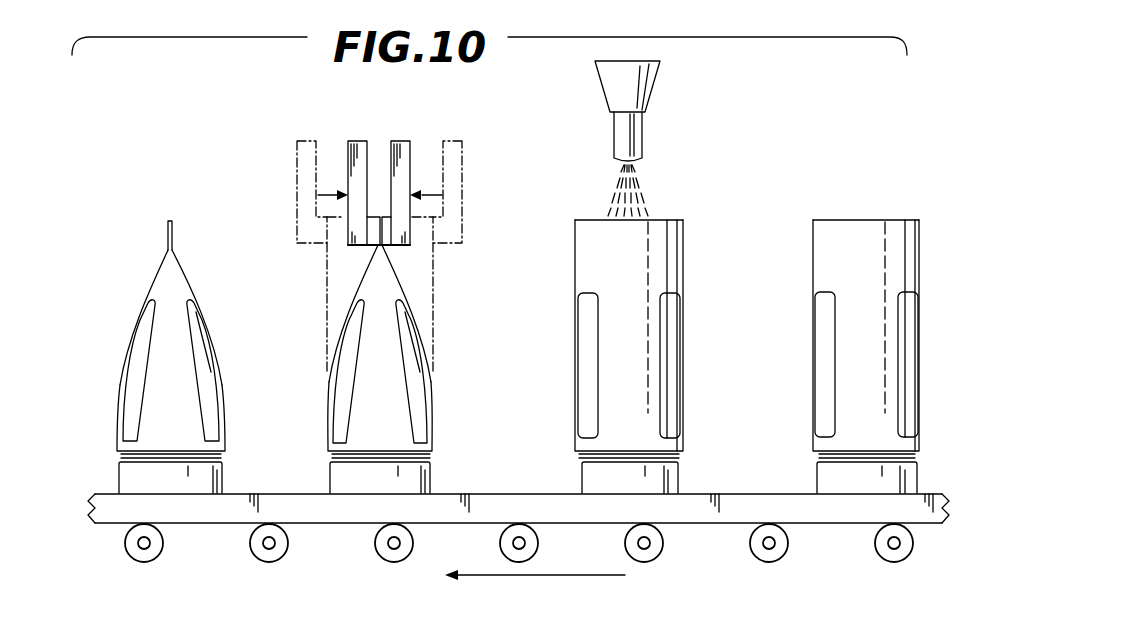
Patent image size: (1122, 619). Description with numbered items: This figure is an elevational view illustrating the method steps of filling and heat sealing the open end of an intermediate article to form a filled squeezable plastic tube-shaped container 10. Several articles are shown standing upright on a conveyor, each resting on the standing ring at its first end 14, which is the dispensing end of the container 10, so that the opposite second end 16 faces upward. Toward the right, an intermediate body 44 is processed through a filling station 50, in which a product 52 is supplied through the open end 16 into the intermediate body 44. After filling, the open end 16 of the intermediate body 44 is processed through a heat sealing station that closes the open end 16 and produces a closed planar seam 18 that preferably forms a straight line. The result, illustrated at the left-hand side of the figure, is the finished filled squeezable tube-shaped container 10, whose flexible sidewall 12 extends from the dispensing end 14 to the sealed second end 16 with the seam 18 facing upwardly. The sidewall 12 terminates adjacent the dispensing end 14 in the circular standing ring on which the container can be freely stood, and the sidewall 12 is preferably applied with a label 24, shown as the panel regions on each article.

The tube-shaped container 10 is at (120, 295).
The flexible sidewall 12 is at (185, 298).
The first end 14 is at (224, 478).
The second end 16 is at (170, 220).
The seam 18 is at (175, 237).
The label 24 is at (210, 387).
The intermediate body 44 is at (658, 258).
The filling station 50 is at (643, 77).
The product 52 is at (397, 141).